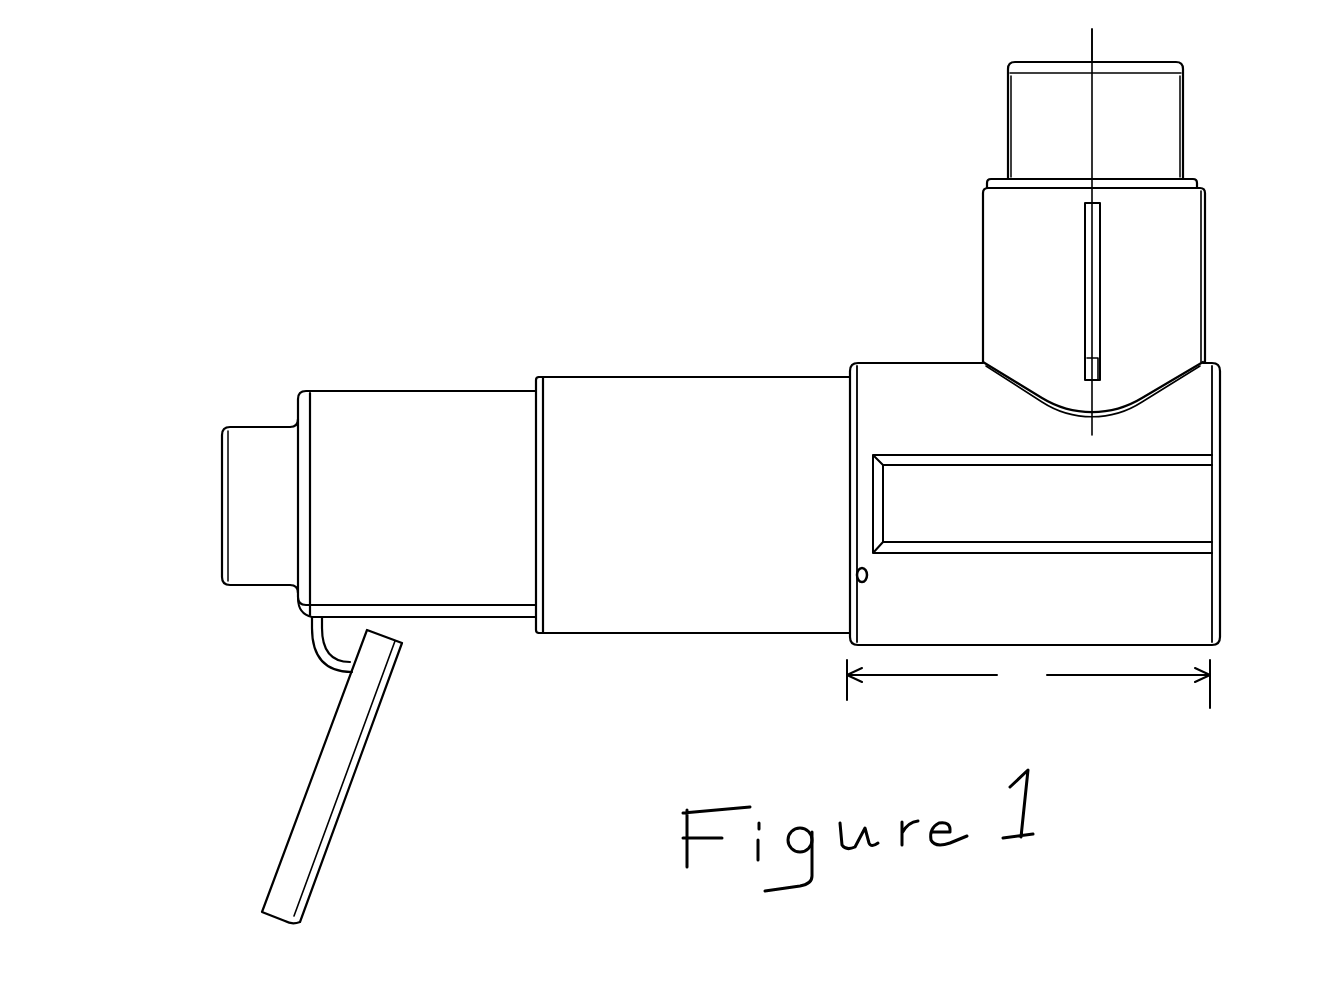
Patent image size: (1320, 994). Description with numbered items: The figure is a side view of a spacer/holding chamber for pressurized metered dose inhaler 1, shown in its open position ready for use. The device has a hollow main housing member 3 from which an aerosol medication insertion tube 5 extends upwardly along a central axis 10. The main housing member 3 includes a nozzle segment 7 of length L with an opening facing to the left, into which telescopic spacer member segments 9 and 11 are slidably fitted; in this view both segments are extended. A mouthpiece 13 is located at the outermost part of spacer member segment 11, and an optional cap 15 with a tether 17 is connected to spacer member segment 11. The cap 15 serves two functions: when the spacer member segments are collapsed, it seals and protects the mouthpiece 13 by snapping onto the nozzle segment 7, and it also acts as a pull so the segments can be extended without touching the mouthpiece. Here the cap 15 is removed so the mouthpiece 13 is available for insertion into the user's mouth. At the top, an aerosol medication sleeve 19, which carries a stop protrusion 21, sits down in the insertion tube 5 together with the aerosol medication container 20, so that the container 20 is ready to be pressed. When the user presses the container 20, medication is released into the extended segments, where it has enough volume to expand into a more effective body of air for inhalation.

The spacer/holding chamber for pressurized metered dose inhaler 1 is at (765, 250).
The main housing member 3 is at (1170, 423).
The aerosol medication insertion tube 5 is at (1172, 295).
The nozzle segment 7 is at (890, 390).
The telescopic spacer member segment 9 is at (628, 615).
The central axis 10 is at (1090, 135).
The telescopic spacer member segment 11 is at (477, 590).
The mouthpiece 13 is at (258, 472).
The cap 15 is at (343, 797).
The tether 17 is at (327, 655).
The aerosol medication sleeve 19 is at (1187, 173).
The aerosol medication container 20 is at (1137, 128).
The stop protrusion 21 is at (1100, 362).